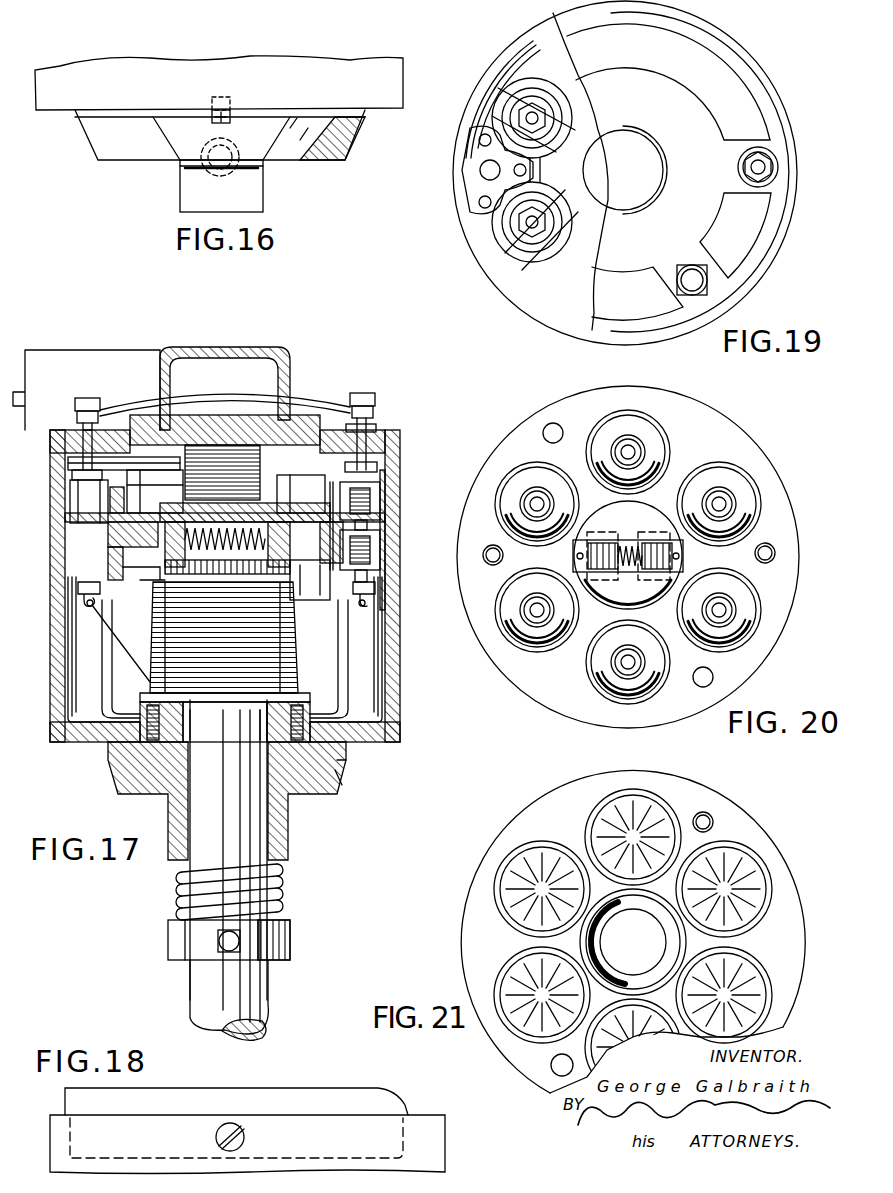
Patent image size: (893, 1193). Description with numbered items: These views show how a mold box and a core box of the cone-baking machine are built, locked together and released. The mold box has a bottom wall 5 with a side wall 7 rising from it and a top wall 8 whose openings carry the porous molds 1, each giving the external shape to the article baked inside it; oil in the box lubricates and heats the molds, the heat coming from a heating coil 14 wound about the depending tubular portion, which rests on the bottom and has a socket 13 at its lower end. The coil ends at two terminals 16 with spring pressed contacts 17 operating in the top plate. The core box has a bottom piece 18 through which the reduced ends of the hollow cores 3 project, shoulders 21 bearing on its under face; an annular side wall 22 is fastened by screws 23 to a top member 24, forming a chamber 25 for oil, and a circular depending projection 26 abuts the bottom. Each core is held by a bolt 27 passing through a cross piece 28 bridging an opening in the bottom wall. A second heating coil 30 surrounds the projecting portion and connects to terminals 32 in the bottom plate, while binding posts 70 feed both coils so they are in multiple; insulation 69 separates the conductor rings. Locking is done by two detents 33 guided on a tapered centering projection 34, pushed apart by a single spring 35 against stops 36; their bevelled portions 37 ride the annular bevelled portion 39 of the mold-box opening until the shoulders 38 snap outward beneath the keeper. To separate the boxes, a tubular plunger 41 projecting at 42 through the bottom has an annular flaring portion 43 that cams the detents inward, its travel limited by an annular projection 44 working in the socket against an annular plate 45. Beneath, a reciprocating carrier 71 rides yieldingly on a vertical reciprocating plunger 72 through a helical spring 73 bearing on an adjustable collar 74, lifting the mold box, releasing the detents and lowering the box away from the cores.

In FIG. 17, the mold 1 is at (120, 665).
In FIG. 20, the core 3 is at (585, 656).
In FIG. 17, the bottom wall 5 is at (385, 738).
In FIG. 17, the side wall 7 is at (55, 648).
In FIG. 17, the top wall 8 is at (352, 488).
In FIG. 17, the socket 13 is at (330, 700).
In FIG. 17, the heating coil 14 is at (300, 625).
In FIG. 17, the terminals 16 is at (83, 596).
In FIG. 17, the spring pressed contacts 17 is at (390, 522).
In FIG. 20, the spring pressed contacts 17 is at (712, 677).
In FIG. 21, the spring pressed contacts 17 is at (712, 814).
In FIG. 17, the bottom piece 18 is at (325, 430).
In FIG. 19, the shoulders 21 is at (565, 300).
In FIG. 17, the annular side wall 22 is at (68, 470).
In FIG. 18, the annular side wall 22 is at (425, 1112).
In FIG. 18, the screws 23 is at (238, 1128).
In FIG. 18, the top member 24 is at (325, 1098).
In FIG. 17, the chamber 25 is at (150, 473).
In FIG. 17, the circular depending projection 26 is at (258, 468).
In FIG. 19, the bolt 27 is at (548, 118).
In FIG. 19, the cross piece 28 is at (537, 100).
In FIG. 17, the heating coil 30 is at (172, 443).
In FIG. 17, the terminals 32 is at (92, 472).
In FIG. 17, the detents 33 is at (262, 512).
In FIG. 20, the detents 33 is at (596, 545).
In FIG. 16, the tapered centering projection 34 is at (330, 120).
In FIG. 16, the spring 35 is at (232, 145).
In FIG. 17, the spring 35 is at (226, 528).
In FIG. 20, the spring 35 is at (630, 545).
In FIG. 16, the stops 36 is at (217, 120).
In FIG. 17, the stops 36 is at (290, 518).
In FIG. 16, the bevelled portions 37 is at (255, 187).
In FIG. 17, the bevelled portions 37 is at (175, 568).
In FIG. 20, the bevelled portions 37 is at (680, 556).
In FIG. 16, the shoulders 38 is at (240, 163).
In FIG. 17, the shoulders 38 is at (166, 542).
In FIG. 21, the annular bevelled portion 39 is at (607, 900).
In FIG. 17, the tubular plunger 41 is at (110, 740).
In FIG. 17, the projecting portion of plunger 42 is at (345, 758).
In FIG. 17, the annular flaring portion 43 is at (290, 553).
In FIG. 17, the annular projection 44 is at (155, 742).
In FIG. 17, the annular plate 45 is at (338, 770).
In FIG. 17, the insulation 69 is at (123, 405).
In FIG. 17, the binding posts 70 is at (88, 396).
In FIG. 17, the reciprocating carrier 71 is at (335, 790).
In FIG. 17, the vertical reciprocating plunger 72 is at (245, 828).
In FIG. 17, the helical spring 73 is at (278, 878).
In FIG. 17, the adjustable collar 74 is at (290, 940).